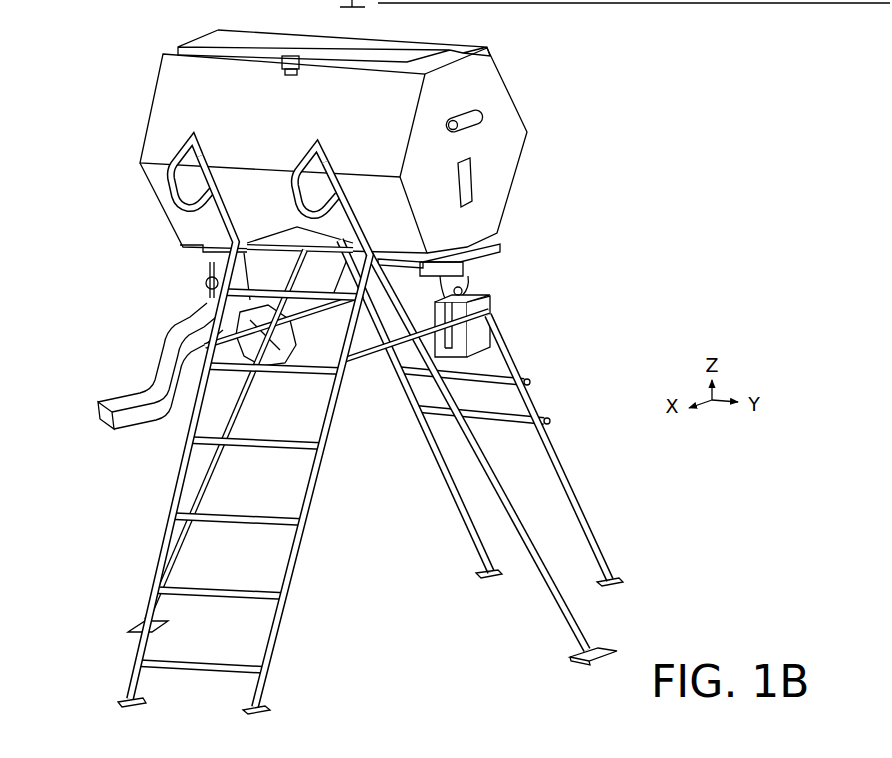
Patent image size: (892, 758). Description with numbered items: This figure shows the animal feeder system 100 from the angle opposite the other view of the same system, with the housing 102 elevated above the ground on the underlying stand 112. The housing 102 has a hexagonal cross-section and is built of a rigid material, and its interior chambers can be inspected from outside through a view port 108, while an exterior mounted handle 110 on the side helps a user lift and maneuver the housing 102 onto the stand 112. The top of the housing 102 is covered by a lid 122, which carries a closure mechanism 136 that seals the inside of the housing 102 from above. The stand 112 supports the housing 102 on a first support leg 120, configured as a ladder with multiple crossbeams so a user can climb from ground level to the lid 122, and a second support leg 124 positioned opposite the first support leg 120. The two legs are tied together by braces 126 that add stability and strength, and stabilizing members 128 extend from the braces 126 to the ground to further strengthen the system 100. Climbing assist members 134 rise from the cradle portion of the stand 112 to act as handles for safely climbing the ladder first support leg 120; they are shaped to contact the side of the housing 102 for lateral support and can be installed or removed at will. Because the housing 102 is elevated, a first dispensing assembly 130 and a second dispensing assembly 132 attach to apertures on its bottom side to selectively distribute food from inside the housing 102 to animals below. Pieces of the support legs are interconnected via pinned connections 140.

The animal feeder system 100 is at (394, 357).
The housing 102 is at (318, 183).
The view port 108 is at (483, 183).
The exterior mounted handle 110 is at (492, 100).
The stand 112 is at (344, 421).
The first support leg 120 is at (294, 618).
The lid 122 is at (239, 29).
The second support leg 124 is at (556, 452).
The braces 126 is at (353, 366).
The stabilizing members 128 is at (536, 574).
The first dispensing assembly 130 is at (497, 322).
The second dispensing assembly 132 is at (146, 337).
The climbing assist members 134 is at (314, 148).
The closure mechanism 136 is at (282, 78).
The pinned connections 140 is at (322, 497).